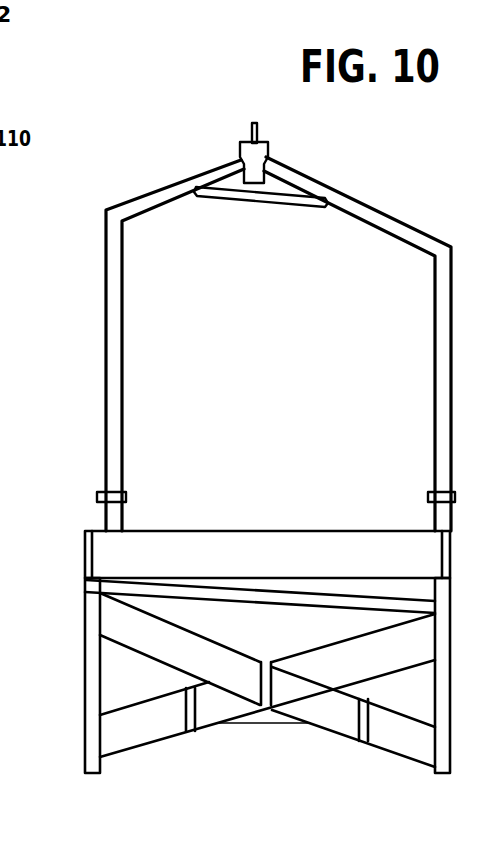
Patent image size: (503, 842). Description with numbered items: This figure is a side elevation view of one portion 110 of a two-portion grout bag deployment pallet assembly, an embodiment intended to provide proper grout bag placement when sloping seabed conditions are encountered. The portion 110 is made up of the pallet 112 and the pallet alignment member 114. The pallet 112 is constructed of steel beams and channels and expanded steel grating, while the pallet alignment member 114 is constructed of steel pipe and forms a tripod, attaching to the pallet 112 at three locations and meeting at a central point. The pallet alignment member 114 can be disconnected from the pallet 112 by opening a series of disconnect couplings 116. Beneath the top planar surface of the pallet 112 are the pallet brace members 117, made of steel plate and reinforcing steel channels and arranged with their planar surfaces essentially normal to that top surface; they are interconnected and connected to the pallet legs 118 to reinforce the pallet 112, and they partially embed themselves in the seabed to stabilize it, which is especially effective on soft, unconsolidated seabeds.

The grout bag deployment pallet portion 110 is at (362, 322).
The pallet 112 is at (352, 552).
The pallet alignment member 114 is at (113, 355).
The disconnect couplings 116 is at (126, 497).
The pallet brace members 117 is at (185, 650).
The pallet legs 118 is at (102, 742).